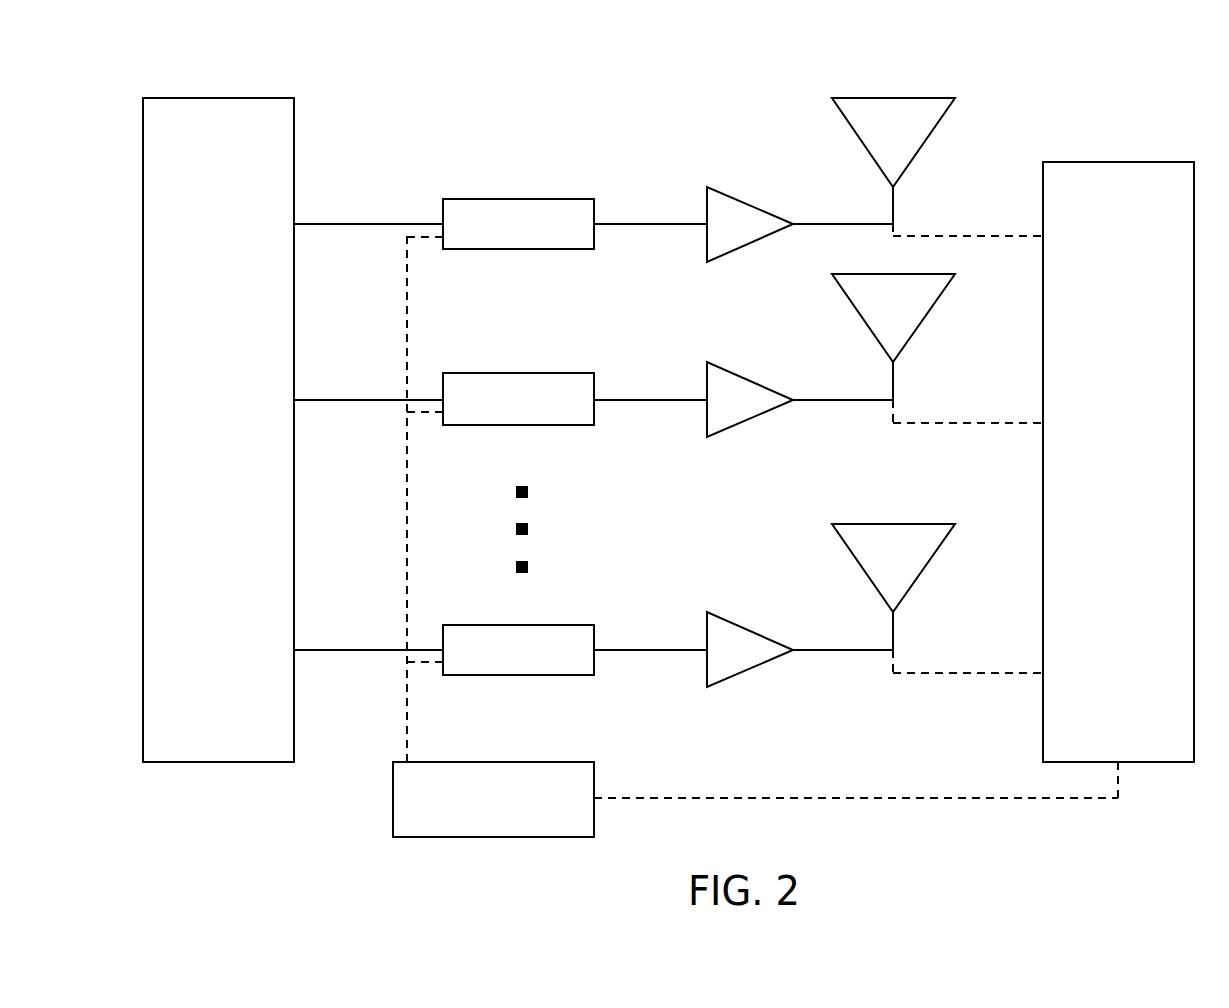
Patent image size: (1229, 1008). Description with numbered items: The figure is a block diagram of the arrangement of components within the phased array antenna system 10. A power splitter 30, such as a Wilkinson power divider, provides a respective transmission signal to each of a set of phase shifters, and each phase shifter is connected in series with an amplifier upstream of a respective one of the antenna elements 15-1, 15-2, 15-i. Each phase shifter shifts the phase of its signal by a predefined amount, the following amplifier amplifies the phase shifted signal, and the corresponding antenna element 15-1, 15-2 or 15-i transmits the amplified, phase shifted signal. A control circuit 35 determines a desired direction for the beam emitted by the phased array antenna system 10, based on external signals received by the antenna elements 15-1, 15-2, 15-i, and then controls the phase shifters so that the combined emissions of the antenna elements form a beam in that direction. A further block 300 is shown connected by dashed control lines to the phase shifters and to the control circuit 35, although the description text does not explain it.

The phased array antenna system 10 is at (990, 72).
The power splitter 30 is at (294, 147).
The control circuit 35 is at (1137, 162).
The control unit 300 is at (589, 762).
The antenna element 15-1 is at (893, 161).
The antenna element 15-2 is at (893, 337).
The antenna element 15-i is at (893, 587).